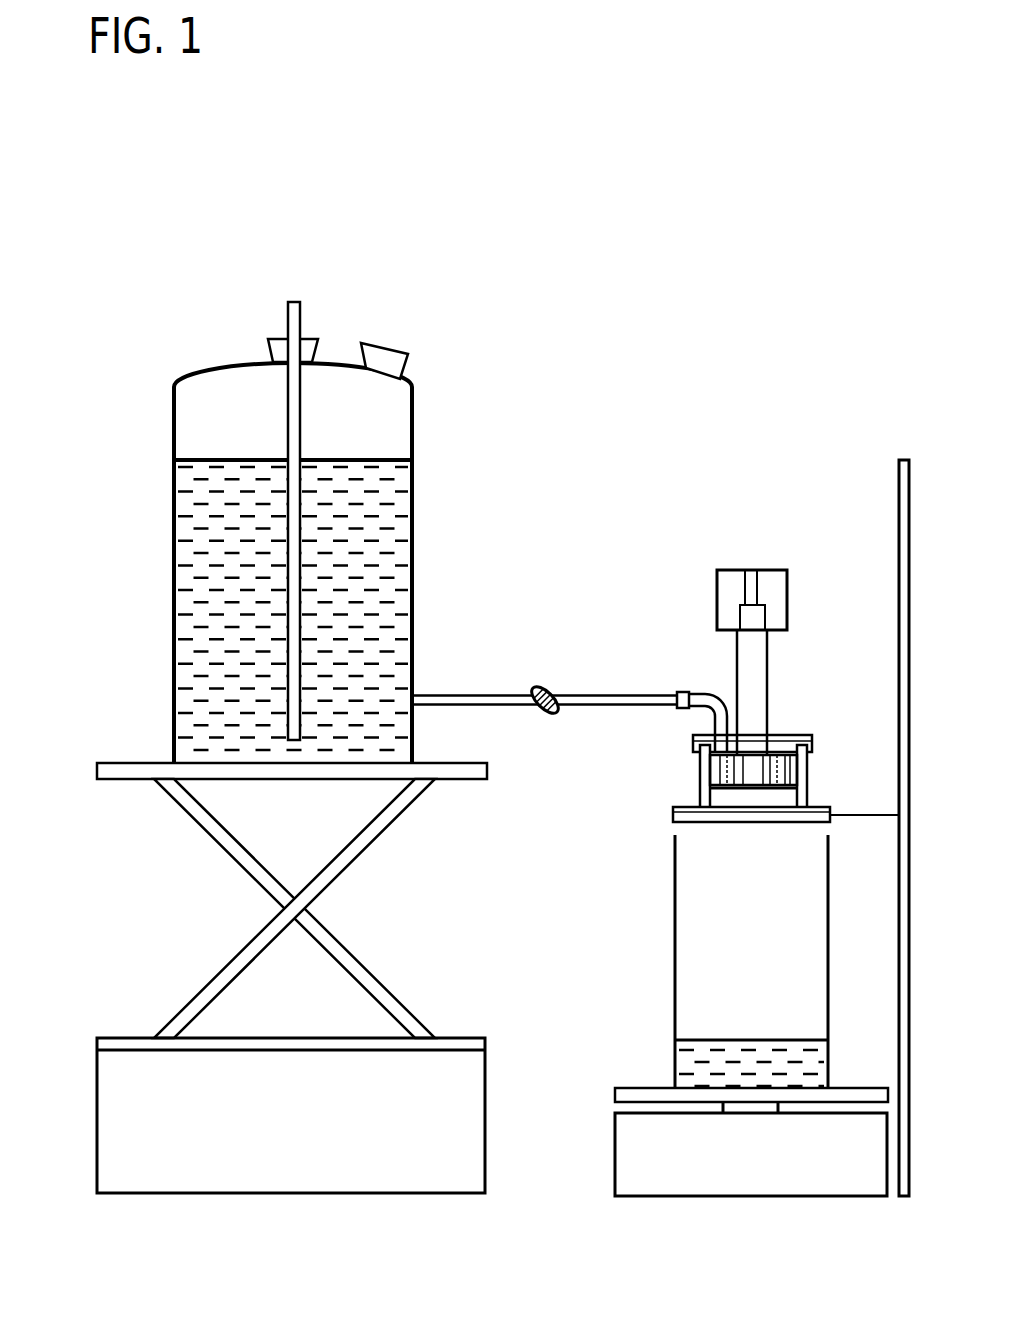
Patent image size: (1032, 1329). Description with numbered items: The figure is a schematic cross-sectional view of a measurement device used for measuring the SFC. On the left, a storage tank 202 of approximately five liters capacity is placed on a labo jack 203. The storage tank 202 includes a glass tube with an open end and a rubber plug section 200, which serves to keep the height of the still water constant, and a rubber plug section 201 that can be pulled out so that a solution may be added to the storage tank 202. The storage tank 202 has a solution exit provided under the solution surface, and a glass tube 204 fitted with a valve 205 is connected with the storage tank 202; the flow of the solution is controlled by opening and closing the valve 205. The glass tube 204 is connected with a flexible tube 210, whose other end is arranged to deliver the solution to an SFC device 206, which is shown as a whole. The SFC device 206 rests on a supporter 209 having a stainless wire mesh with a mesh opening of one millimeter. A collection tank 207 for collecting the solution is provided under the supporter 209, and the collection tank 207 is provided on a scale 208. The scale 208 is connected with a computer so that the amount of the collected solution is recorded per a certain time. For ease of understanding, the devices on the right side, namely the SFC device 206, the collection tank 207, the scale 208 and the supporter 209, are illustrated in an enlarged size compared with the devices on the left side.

The glass tube with open end and rubber plug section 200 is at (302, 304).
The rubber plug section 201 is at (390, 344).
The storage tank 202 is at (414, 413).
The labo jack 203 is at (355, 958).
The glass tube 204 is at (440, 695).
The valve 205 is at (553, 692).
The SFC device 206 is at (770, 570).
The collection tank 207 is at (673, 926).
The scale 208 is at (614, 1152).
The supporter 209 is at (856, 815).
The flexible tube 210 is at (683, 708).